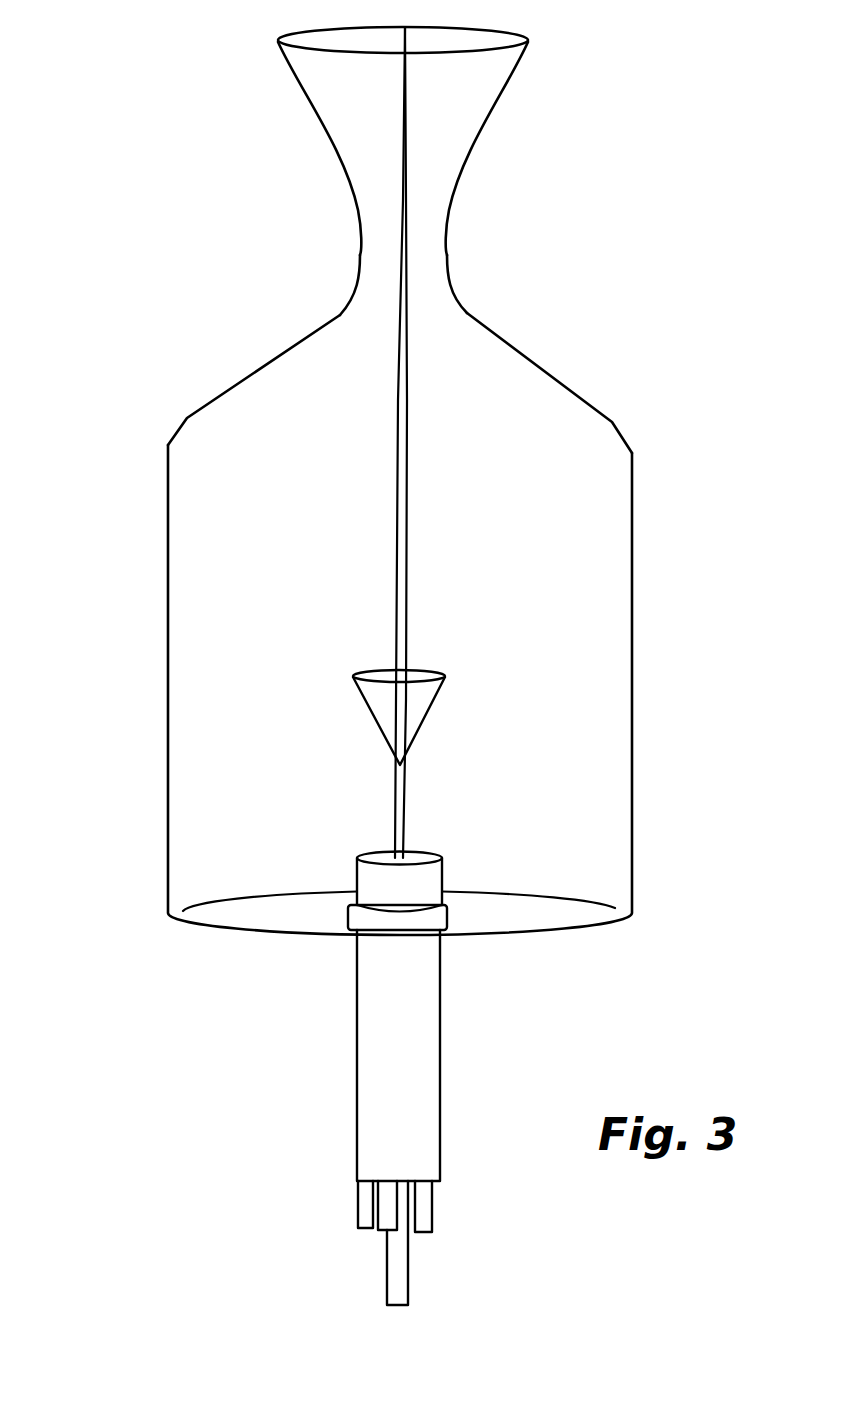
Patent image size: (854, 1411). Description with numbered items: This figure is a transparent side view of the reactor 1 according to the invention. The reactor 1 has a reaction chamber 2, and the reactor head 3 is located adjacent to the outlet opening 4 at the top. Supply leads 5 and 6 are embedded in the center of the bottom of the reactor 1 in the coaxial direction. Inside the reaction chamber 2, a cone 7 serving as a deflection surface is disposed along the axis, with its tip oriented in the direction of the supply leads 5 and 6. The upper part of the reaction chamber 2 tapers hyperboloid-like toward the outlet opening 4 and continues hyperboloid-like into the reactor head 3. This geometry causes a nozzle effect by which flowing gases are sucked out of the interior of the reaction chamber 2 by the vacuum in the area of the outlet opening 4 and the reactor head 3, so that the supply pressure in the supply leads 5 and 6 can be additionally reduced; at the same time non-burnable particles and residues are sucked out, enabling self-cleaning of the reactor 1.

The reactor 1 is at (136, 463).
The reaction chamber 2 is at (633, 697).
The reactor head 3 is at (487, 127).
The outlet opening 4 is at (468, 312).
The supply lead 5 is at (432, 1207).
The supply lead 6 is at (441, 1008).
The cone 7 is at (372, 718).